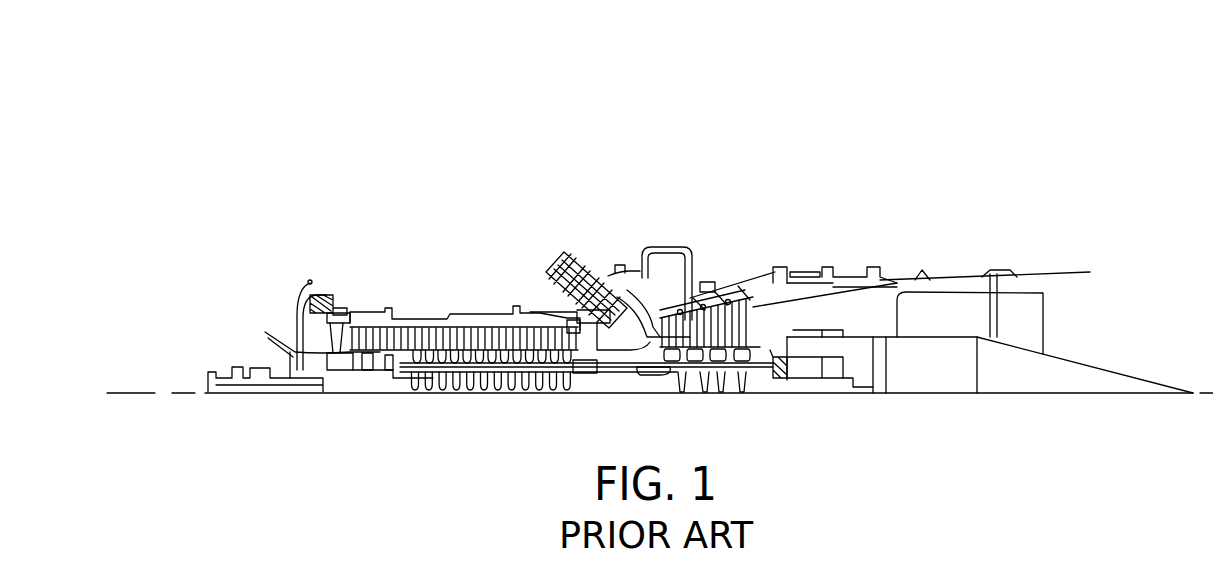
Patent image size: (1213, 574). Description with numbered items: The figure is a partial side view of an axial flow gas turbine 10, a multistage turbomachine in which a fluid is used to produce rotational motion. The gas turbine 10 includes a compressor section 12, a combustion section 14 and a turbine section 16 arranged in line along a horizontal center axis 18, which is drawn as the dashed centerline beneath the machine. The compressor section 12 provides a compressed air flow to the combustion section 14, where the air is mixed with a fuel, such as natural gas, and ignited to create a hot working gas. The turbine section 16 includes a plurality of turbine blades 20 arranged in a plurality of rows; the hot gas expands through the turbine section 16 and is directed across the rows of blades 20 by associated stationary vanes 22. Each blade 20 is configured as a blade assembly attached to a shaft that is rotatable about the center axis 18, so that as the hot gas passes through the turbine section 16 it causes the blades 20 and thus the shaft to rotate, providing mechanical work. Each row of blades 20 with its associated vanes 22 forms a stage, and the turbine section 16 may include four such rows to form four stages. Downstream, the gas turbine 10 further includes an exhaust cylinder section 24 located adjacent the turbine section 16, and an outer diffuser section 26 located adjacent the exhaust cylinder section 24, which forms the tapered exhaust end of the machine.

The axial flow gas turbine 10 is at (285, 152).
The compressor section 12 is at (473, 310).
The combustion section 14 is at (668, 280).
The turbine section 16 is at (727, 265).
The horizontal center axis 18 is at (135, 393).
The turbine blades 20 is at (762, 246).
The stationary vanes 22 is at (708, 266).
The exhaust cylinder section 24 is at (814, 265).
The outer diffuser section 26 is at (977, 263).